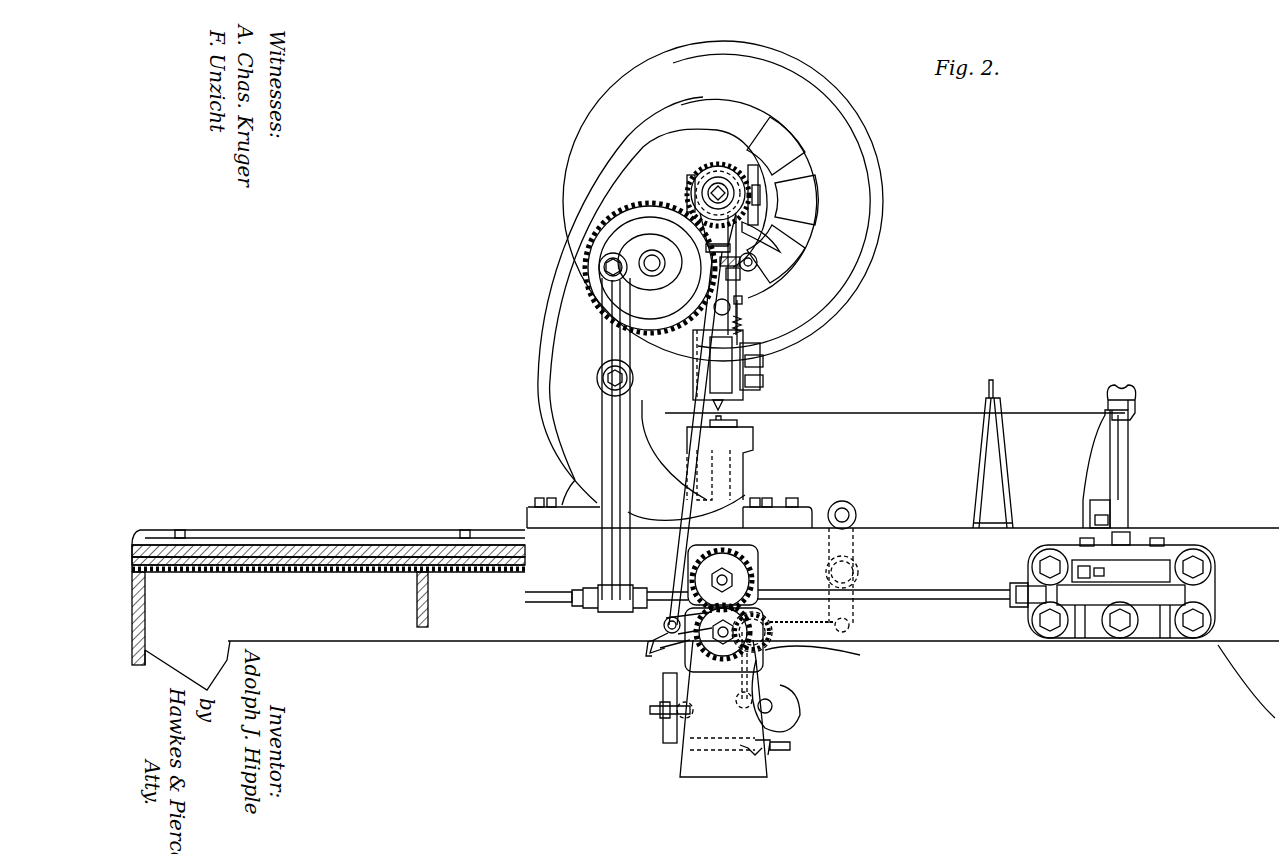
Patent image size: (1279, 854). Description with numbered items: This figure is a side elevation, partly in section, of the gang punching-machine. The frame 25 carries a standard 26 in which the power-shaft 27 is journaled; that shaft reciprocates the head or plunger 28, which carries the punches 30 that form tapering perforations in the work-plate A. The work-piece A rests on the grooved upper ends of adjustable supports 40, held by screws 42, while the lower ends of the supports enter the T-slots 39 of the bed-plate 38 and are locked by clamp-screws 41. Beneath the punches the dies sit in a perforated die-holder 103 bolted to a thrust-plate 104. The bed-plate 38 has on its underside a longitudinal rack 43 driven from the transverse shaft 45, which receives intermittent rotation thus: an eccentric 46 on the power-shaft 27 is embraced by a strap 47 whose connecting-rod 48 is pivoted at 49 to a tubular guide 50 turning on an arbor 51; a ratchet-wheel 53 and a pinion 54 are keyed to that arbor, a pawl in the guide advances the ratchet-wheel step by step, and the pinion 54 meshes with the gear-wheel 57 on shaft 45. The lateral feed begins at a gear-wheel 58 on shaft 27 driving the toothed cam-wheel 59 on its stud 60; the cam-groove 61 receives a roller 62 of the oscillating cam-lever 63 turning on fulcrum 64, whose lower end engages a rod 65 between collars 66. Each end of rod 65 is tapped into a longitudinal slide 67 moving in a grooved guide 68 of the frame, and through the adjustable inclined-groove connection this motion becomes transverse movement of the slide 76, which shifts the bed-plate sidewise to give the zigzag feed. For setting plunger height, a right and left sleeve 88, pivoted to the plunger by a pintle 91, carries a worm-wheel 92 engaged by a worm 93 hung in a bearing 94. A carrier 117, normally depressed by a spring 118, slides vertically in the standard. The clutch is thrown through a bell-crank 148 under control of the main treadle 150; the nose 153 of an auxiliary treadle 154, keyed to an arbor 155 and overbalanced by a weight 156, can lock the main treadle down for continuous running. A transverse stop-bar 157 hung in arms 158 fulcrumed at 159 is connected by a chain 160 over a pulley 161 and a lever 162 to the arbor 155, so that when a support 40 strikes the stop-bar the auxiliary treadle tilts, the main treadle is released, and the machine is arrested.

The frame 25 is at (712, 608).
The standard 26 is at (593, 439).
The power-shaft 27 is at (706, 192).
The plunger 28 is at (742, 304).
The punches 30 is at (725, 404).
The bed-plate 38 is at (376, 542).
The T-slots 39 is at (474, 540).
The adjustable supports 40 is at (1010, 496).
The clamp-screws 41 is at (1110, 518).
The screws 42 is at (1140, 390).
The rack 43 is at (486, 574).
The transverse shaft 45 is at (735, 580).
The eccentric 46 is at (740, 201).
The strap 47 is at (712, 190).
The connecting-rod 48 is at (693, 378).
The pivot 49 is at (655, 648).
The tubular guide 50 is at (663, 655).
The arbor 51 is at (765, 640).
The ratchet-wheel 53 is at (722, 655).
The pinion 54 is at (740, 648).
The gear-wheel 57 is at (740, 572).
The gear-wheel 58 is at (735, 170).
The cam-wheel 59 is at (663, 328).
The stud 60 is at (652, 272).
The cam-groove 61 is at (650, 261).
The roller 62 is at (600, 264).
The cam-lever 63 is at (600, 413).
The fulcrum 64 is at (598, 379).
The rod 65 is at (543, 592).
The collars 66 is at (630, 612).
The longitudinal slide 67 is at (1030, 596).
The grooved guide 68 is at (1215, 592).
The transversely-movable slide 76 is at (1128, 608).
The right and left sleeve 88 is at (752, 245).
The pintle 91 is at (742, 326).
The worm-wheel 92 is at (745, 278).
The worm 93 is at (757, 264).
The bearing 94 is at (742, 260).
The die-holder 103 is at (740, 424).
The thrust-plate 104 is at (745, 448).
The carrier 117 is at (760, 366).
The spring 118 is at (745, 327).
The bell-crank 148 is at (665, 700).
The main treadle 150 is at (775, 745).
The nose 153 is at (758, 752).
The auxiliary treadle 154 is at (738, 748).
The arbor 155 is at (770, 700).
The weight 156 is at (773, 706).
The stop-bar 157 is at (848, 510).
The arms 158 is at (856, 517).
The fulcrum 159 is at (867, 572).
The chain 160 is at (809, 613).
The pulley 161 is at (832, 655).
The lever 162 is at (744, 708).
The work-plate A is at (920, 414).